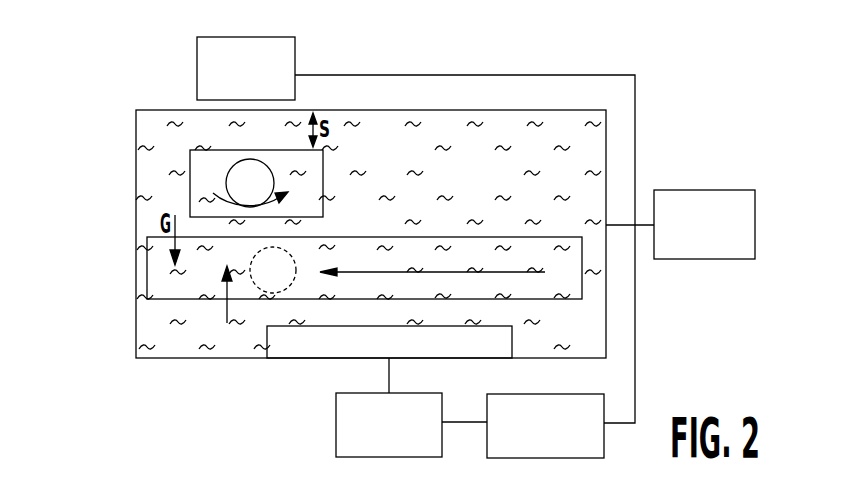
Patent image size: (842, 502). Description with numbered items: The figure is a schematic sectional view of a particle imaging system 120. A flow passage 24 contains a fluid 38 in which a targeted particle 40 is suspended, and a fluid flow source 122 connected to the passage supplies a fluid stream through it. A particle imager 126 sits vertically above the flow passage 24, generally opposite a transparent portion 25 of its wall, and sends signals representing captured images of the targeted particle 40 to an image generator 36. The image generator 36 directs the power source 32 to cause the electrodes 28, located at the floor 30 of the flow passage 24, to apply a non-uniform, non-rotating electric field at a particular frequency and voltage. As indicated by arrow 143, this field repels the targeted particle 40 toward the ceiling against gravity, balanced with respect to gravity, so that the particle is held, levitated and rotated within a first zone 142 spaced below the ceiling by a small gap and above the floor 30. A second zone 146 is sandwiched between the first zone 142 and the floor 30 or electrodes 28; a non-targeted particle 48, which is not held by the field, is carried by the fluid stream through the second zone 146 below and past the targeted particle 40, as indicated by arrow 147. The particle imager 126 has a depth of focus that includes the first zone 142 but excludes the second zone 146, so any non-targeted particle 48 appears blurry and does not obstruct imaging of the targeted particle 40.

The particle imaging system 120 is at (78, 123).
The flow passage 24 is at (136, 147).
The power source 32 is at (175, 110).
The particle imager 126 is at (197, 78).
The transparent portion 25 is at (240, 112).
The first zone 142 is at (191, 183).
The targeted particle 40 is at (273, 175).
The second zone 146 is at (543, 237).
The non-targeted particle 48 is at (297, 268).
The arrow 147 is at (456, 272).
The arrow 143 is at (222, 287).
The electrodes 28 is at (512, 347).
The fluid 38 is at (584, 324).
The floor 30 is at (174, 352).
The image generator 36 is at (563, 460).
The fluid flow source 122 is at (707, 190).